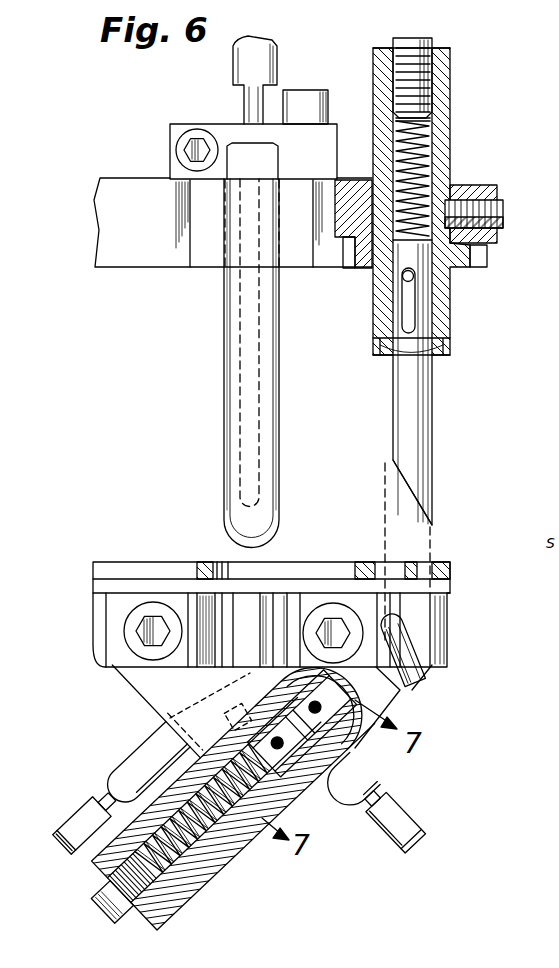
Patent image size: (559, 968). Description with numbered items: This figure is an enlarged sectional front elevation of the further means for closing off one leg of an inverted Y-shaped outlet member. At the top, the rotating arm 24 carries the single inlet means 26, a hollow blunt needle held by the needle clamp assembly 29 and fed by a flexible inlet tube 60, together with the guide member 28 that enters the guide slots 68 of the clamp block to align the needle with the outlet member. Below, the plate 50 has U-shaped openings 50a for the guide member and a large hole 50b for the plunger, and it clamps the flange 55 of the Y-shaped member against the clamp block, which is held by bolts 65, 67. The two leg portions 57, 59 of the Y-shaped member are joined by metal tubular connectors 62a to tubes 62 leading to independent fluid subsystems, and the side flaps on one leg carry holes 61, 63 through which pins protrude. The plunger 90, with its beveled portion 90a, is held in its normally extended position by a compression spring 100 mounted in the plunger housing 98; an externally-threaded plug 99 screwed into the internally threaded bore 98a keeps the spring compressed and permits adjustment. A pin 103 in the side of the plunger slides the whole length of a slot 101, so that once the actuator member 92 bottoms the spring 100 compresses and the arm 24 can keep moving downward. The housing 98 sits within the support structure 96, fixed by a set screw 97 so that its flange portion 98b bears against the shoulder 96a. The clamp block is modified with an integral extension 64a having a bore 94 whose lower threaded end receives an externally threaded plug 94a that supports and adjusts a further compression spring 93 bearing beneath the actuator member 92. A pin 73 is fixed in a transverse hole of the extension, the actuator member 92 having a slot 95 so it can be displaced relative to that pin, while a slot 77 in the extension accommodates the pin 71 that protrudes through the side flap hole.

The rotating arm 24 is at (138, 234).
The single inlet means 26 is at (244, 315).
The guide member 28 is at (225, 400).
The needle clamp assembly 29 is at (164, 143).
The plate 50 is at (95, 572).
The U-shaped openings 50a is at (205, 566).
The large holes 50b is at (447, 563).
The flange 55 is at (300, 572).
The leg portion 57 is at (122, 768).
The leg portion 59 is at (372, 784).
The flexible inlet tube 60 is at (232, 62).
The hole 61 is at (355, 757).
The tubes 62 is at (70, 812).
The metal tubular connectors 62a is at (108, 795).
The hole 63 is at (290, 712).
The integral extension 64a is at (195, 880).
The bolt 65 is at (137, 658).
The bolt 67 is at (333, 615).
The guide slots 68 is at (215, 637).
The pin 71 is at (348, 738).
The pin 73 is at (252, 716).
The slot 77 is at (300, 775).
The plunger 90 is at (434, 416).
The beveled portion 90a is at (390, 478).
The actuator member 92 is at (425, 655).
The compression spring 93 is at (230, 846).
The bore 94 is at (147, 915).
The externally threaded plug 94a is at (98, 905).
The slot 95 is at (292, 798).
The support structure 96 is at (468, 185).
The shoulder 96a is at (346, 270).
The set screw 97 is at (503, 214).
The plunger housing 98 is at (452, 101).
The internally threaded bore 98a is at (432, 76).
The flange portion 98b is at (488, 262).
The externally-threaded plug 99 is at (410, 38).
The compression spring 100 is at (432, 142).
The slot 101 is at (418, 312).
The pin 103 is at (413, 279).